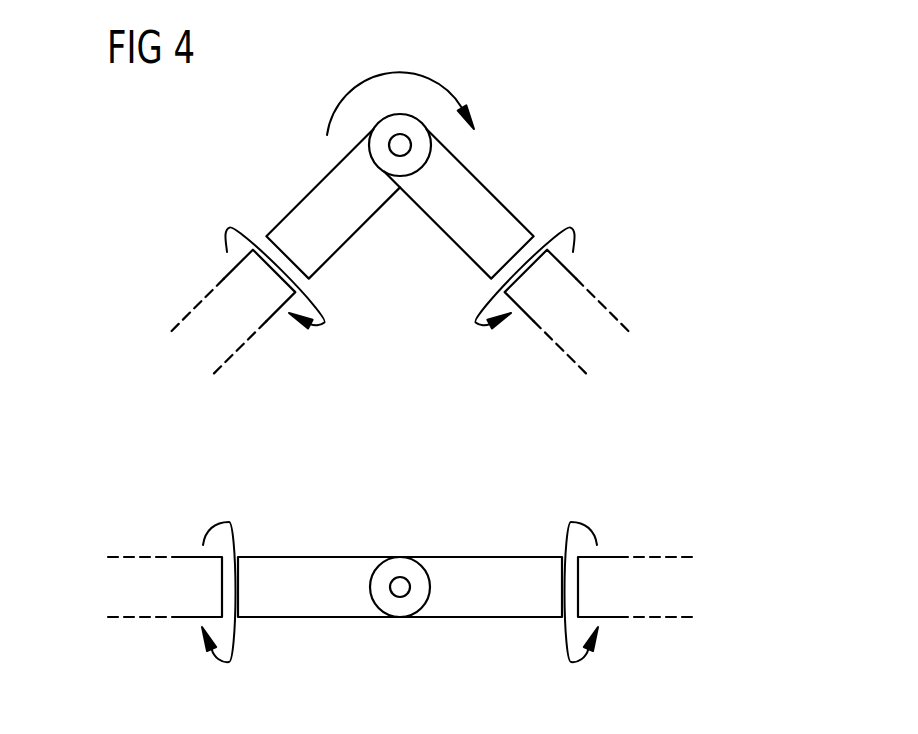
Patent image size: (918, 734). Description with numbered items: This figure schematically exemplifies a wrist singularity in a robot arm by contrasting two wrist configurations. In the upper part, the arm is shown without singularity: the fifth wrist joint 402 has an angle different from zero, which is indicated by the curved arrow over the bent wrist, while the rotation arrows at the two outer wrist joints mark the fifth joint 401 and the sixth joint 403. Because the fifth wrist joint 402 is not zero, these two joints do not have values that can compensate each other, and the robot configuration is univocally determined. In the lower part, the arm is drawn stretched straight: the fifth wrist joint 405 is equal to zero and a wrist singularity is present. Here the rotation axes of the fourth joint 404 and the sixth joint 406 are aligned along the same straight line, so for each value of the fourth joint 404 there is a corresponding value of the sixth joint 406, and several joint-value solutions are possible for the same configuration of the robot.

The joint j5 401 is at (205, 208).
The joint j5 402 is at (440, 53).
The joint j6 403 is at (598, 202).
The joint j4 404 is at (218, 478).
The joint j5 405 is at (407, 508).
The joint j6 406 is at (585, 478).